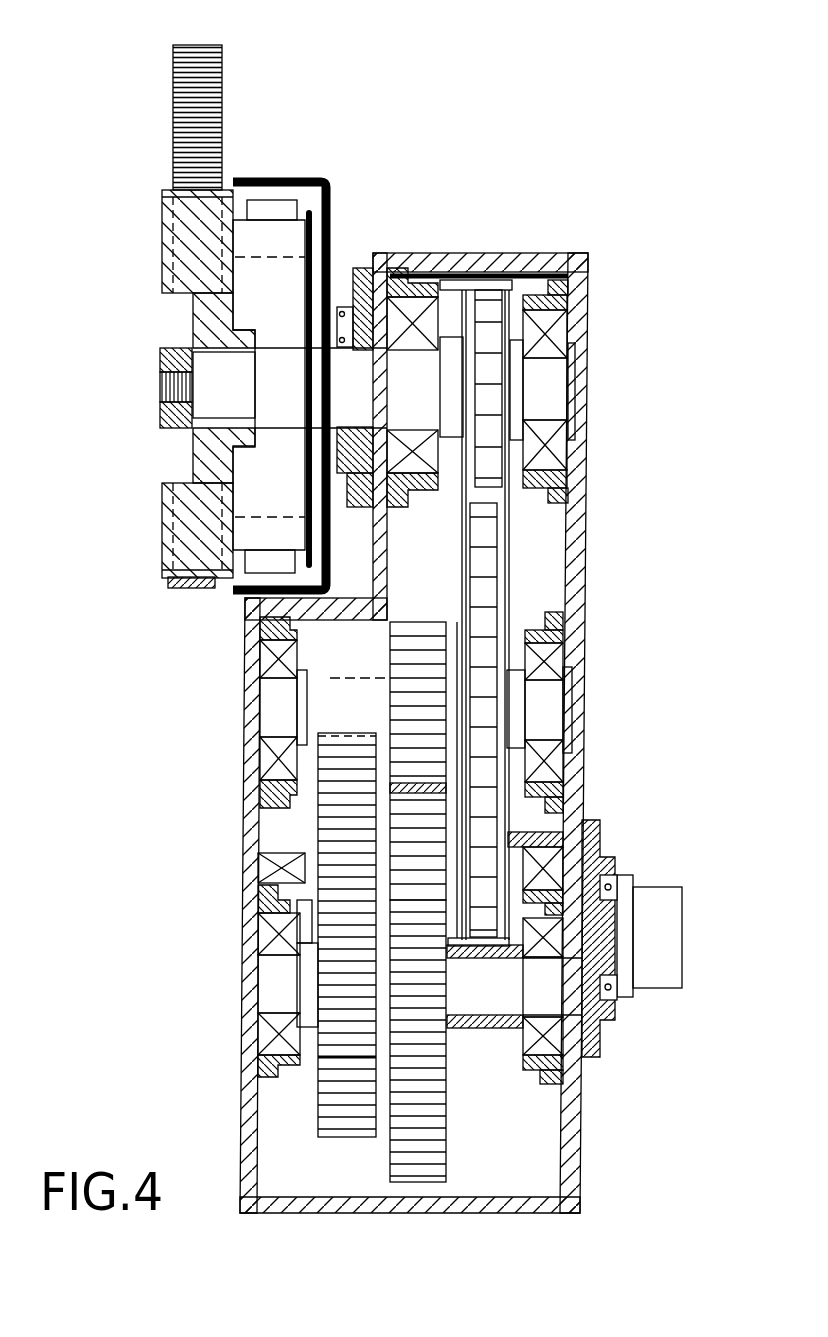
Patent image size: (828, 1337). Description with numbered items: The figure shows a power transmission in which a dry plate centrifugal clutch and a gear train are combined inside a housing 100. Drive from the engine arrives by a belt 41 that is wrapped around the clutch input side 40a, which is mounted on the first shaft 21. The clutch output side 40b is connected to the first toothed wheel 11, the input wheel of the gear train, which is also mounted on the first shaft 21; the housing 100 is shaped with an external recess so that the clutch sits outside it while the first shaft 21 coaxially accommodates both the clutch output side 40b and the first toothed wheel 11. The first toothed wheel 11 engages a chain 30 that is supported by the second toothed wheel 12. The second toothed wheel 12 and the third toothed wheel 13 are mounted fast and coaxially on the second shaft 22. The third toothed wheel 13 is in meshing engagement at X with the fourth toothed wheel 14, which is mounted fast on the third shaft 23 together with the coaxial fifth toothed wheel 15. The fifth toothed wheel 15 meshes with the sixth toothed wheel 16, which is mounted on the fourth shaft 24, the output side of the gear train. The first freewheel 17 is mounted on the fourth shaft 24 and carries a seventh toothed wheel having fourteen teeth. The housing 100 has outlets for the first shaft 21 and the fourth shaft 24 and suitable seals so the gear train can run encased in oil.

The housing 100 is at (568, 1157).
The chain 30 is at (508, 527).
The first shaft 21 is at (425, 392).
The first toothed wheel 11 is at (488, 398).
The second toothed wheel 12 is at (480, 576).
The second shaft 22 is at (547, 717).
The third toothed wheel 13 is at (423, 645).
The meshing engagement point X is at (413, 780).
The fourth toothed wheel 14 is at (410, 1010).
The sixth toothed wheel 16 is at (333, 820).
The fifth toothed wheel 15 is at (267, 998).
The third shaft 23 is at (337, 968).
The fourth shaft 24 is at (605, 930).
The first freewheel 17 is at (657, 947).
The belt 41 is at (222, 110).
The clutch input side 40a is at (205, 223).
The clutch output side 40b is at (265, 315).